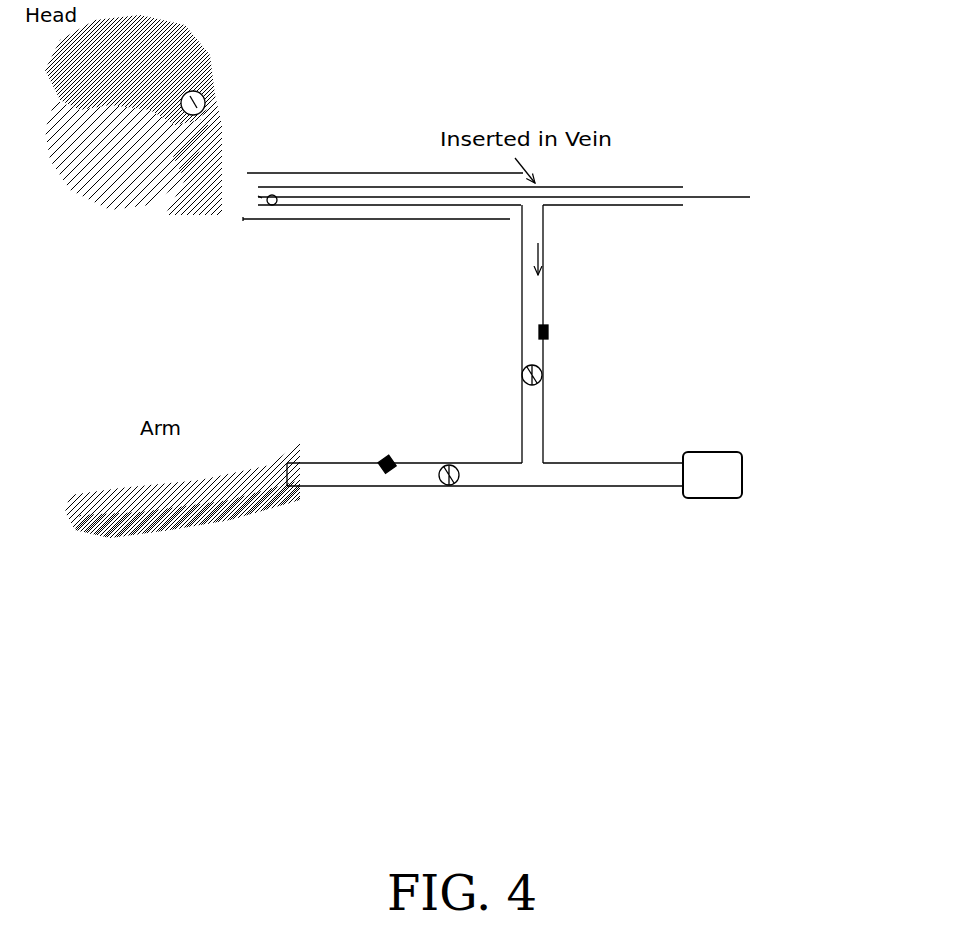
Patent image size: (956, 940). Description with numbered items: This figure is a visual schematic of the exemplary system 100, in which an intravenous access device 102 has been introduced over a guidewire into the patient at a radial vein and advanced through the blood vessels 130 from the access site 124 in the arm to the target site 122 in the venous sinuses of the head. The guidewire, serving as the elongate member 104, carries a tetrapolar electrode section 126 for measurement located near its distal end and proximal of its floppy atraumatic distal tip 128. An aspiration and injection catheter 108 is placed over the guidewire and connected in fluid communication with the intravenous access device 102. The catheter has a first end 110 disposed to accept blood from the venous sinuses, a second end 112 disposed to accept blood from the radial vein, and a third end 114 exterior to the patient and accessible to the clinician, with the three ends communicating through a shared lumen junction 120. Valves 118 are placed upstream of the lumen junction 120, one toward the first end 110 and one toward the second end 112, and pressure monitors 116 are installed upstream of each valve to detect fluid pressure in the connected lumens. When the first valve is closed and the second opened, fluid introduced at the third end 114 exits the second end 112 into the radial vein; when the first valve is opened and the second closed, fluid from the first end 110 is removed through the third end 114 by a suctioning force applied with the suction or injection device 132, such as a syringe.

The system 100 is at (729, 53).
The intravenous access device 102 is at (248, 170).
The elongate member 104 is at (762, 195).
The aspiration and injection catheter 108 is at (356, 490).
The first end 110 is at (253, 219).
The second end 112 is at (302, 463).
The third end 114 is at (668, 463).
The pressure monitors 116 is at (553, 332).
The valves 118 is at (522, 376).
The lumen junction 120 is at (610, 285).
The target site 122 is at (195, 100).
The access site 124 is at (278, 488).
The electrode section 126 is at (270, 198).
The atraumatic distal tip 128 is at (257, 198).
The blood vessels 130 is at (371, 223).
The suction or injection device 132 is at (712, 475).